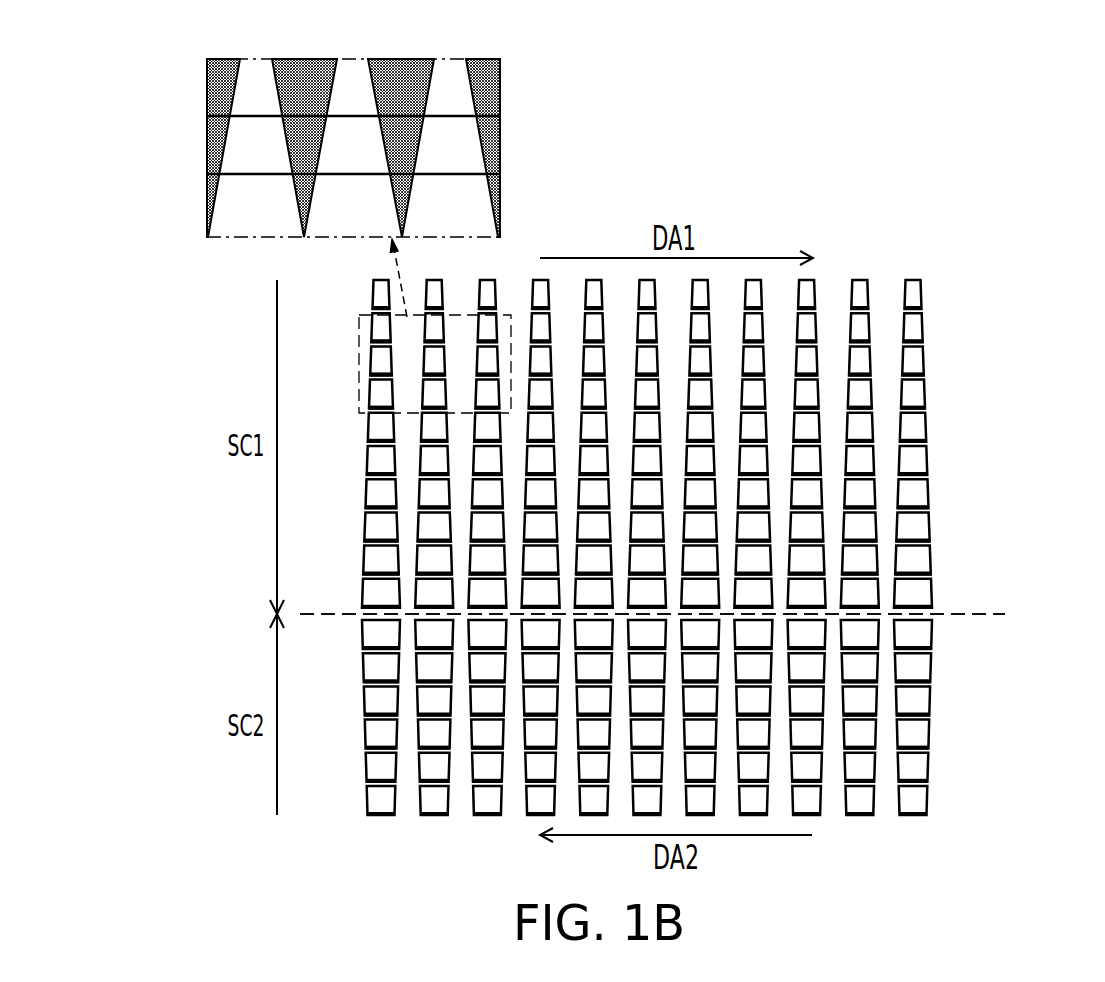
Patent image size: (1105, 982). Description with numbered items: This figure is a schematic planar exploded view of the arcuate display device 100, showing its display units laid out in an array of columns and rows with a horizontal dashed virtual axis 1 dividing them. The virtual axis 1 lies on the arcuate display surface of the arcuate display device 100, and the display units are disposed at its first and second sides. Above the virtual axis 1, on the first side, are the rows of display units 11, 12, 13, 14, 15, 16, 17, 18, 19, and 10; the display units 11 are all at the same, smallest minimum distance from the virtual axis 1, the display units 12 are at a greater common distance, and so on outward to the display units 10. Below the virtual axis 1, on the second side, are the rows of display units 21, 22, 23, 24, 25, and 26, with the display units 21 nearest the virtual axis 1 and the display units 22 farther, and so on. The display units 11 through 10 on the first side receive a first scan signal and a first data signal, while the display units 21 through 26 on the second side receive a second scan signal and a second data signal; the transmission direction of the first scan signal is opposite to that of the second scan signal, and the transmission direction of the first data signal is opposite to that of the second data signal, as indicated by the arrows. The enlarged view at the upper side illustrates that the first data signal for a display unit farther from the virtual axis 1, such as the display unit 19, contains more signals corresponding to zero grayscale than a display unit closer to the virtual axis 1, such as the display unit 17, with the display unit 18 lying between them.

The arcuate display device 100 is at (1063, 861).
The virtual axis 1 is at (1007, 614).
The display unit 10 is at (378, 300).
The display unit 19 is at (378, 333).
The display unit 18 is at (378, 366).
The display unit 17 is at (378, 399).
The display unit 16 is at (378, 432).
The display unit 15 is at (378, 466).
The display unit 14 is at (378, 499).
The display unit 13 is at (378, 532).
The display unit 12 is at (378, 565).
The display unit 11 is at (378, 598).
The display unit 21 is at (378, 640).
The display unit 22 is at (378, 673).
The display unit 23 is at (378, 706).
The display unit 24 is at (378, 739).
The display unit 25 is at (378, 772).
The display unit 26 is at (378, 806).